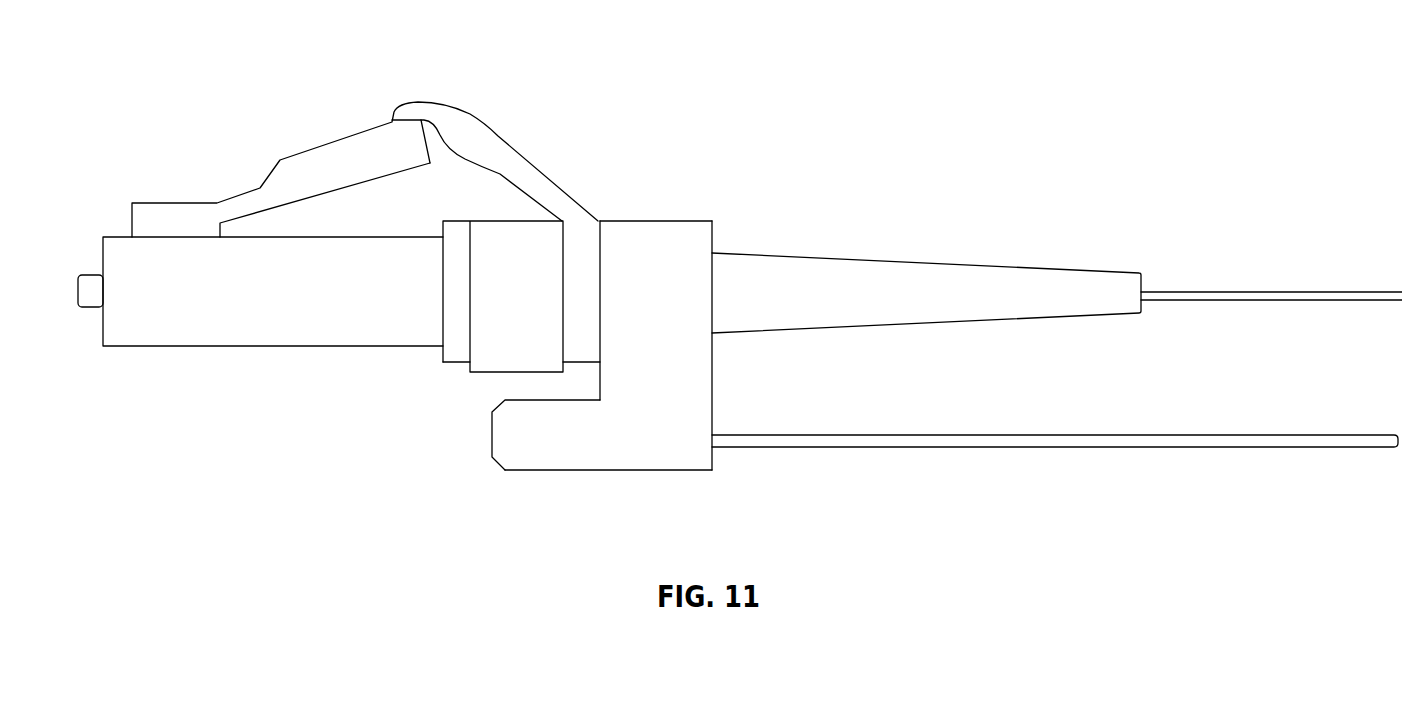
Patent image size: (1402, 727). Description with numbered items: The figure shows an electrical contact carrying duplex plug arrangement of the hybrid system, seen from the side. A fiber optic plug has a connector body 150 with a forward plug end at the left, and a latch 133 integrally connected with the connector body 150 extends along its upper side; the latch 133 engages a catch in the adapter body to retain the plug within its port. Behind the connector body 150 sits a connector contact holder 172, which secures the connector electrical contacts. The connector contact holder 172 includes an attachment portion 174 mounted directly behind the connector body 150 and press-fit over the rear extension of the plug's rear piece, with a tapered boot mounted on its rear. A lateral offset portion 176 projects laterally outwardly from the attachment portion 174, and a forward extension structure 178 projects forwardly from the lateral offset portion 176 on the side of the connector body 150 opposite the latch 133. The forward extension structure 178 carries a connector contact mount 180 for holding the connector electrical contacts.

The latch 133 is at (312, 148).
The connector body 150 is at (242, 346).
The connector contact holder 172 is at (775, 349).
The attachment portion 174 is at (655, 220).
The lateral offset portion 176 is at (712, 365).
The forward extension structure 178 is at (582, 473).
The connector contact mount 180 is at (497, 465).